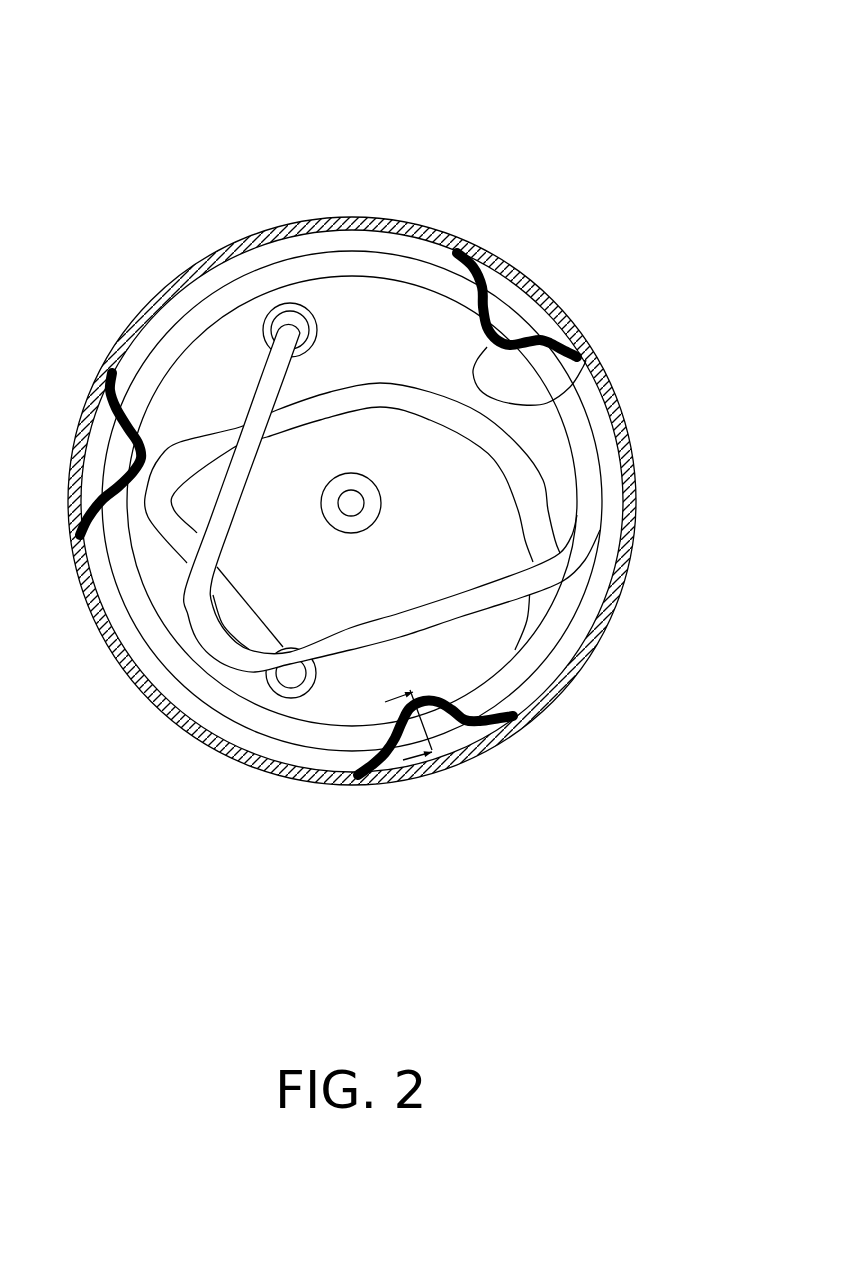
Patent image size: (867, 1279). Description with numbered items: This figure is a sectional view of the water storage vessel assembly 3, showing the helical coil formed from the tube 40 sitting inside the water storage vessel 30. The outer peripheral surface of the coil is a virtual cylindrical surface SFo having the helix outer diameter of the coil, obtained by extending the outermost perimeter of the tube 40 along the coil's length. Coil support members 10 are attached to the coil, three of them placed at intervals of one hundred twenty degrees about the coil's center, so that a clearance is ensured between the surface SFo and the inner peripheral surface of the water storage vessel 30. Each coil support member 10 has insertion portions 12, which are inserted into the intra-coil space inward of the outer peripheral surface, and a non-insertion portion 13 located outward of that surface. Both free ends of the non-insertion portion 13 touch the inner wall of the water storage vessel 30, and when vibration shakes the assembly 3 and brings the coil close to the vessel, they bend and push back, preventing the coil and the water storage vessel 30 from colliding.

The rotary compressor assembly 3 is at (192, 92).
The water storage vessel 30 is at (352, 534).
The virtual cylindrical surface SFo is at (231, 727).
The tube 40 is at (388, 266).
The coil support member 10 is at (398, 424).
The non-insertion portion 13 is at (570, 346).
The insertion portion 12 is at (583, 372).